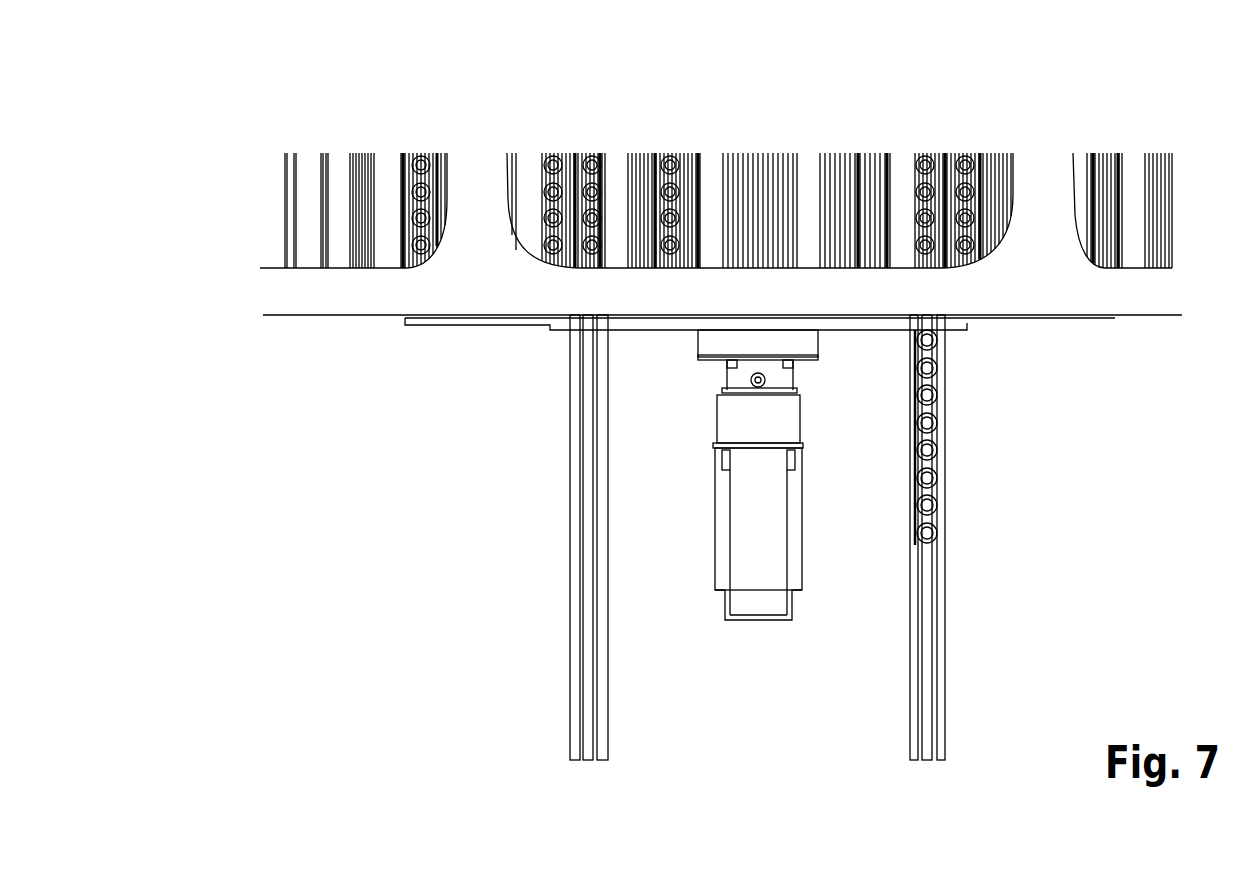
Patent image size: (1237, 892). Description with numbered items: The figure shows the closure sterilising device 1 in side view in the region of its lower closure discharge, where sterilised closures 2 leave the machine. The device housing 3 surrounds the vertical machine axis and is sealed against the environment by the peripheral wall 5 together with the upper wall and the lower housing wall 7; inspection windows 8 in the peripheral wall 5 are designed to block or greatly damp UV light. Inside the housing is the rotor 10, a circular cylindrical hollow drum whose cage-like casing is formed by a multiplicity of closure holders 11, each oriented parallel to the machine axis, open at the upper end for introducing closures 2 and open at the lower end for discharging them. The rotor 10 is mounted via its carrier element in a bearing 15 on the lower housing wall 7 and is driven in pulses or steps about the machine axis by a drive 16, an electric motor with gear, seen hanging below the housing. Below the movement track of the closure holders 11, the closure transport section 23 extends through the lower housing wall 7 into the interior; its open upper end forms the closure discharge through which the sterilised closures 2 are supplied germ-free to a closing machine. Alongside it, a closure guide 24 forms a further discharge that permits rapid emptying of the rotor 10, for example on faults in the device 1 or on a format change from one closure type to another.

The device 1 is at (259, 129).
The closures 2 is at (673, 155).
The device housing 3 is at (254, 331).
The peripheral wall 5 is at (487, 260).
The lower housing wall 7 is at (383, 316).
The inspection windows 8 is at (515, 220).
The rotor 10 is at (896, 279).
The closure holders 11 is at (700, 187).
The bearing 15 is at (650, 362).
The drive 16 is at (763, 545).
The closure transport section 23 is at (940, 618).
The closure guide 24 is at (572, 515).